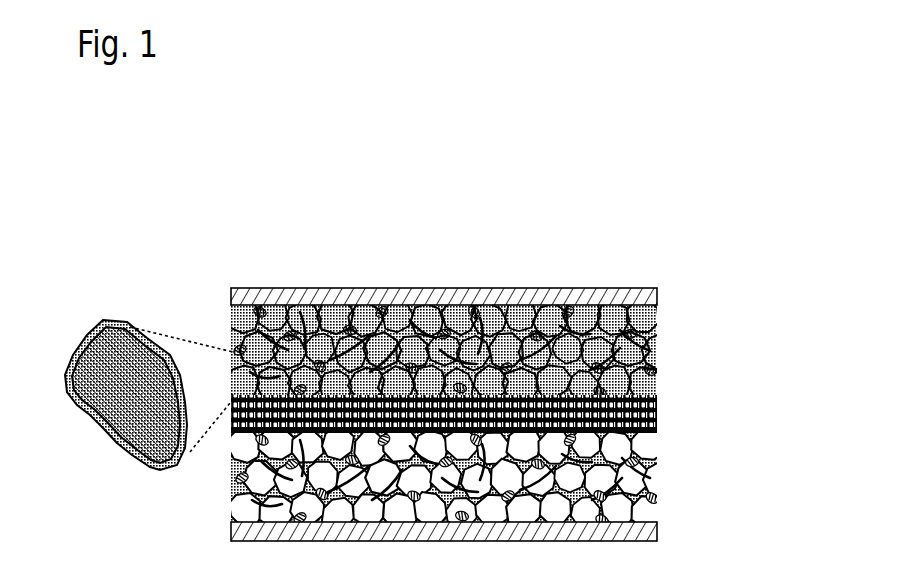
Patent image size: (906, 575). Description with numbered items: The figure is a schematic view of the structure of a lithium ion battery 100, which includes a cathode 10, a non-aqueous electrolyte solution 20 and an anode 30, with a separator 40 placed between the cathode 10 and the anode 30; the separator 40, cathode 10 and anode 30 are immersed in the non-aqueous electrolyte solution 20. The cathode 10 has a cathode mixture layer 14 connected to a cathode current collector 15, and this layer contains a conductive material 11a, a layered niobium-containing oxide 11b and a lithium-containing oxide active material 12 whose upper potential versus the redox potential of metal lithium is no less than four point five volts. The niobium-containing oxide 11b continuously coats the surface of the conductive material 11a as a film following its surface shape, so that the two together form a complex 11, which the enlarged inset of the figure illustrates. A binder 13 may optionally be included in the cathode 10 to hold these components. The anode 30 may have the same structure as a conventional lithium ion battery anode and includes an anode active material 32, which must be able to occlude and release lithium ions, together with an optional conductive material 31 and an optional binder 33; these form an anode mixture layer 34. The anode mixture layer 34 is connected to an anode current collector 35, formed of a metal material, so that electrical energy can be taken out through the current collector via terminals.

The lithium ion battery 100 is at (453, 260).
The cathode 10 is at (447, 369).
The cathode current collector 15 is at (657, 296).
The cathode mixture layer 14 is at (426, 369).
The complex 11 is at (657, 322).
The conductive material 11a is at (142, 442).
The layered niobium-containing oxide 11b is at (92, 415).
The binder 13 is at (657, 362).
The lithium-containing oxide active material 12 is at (718, 310).
The non-aqueous electrolyte solution 20 is at (657, 404).
The separator 40 is at (657, 425).
The anode 30 is at (511, 481).
The anode mixture layer 34 is at (489, 478).
The conductive material 31 is at (657, 450).
The binder 33 is at (657, 489).
The anode active material 32 is at (718, 440).
The anode current collector 35 is at (493, 533).